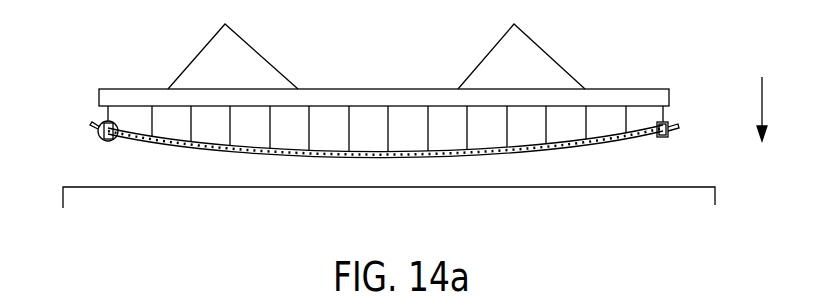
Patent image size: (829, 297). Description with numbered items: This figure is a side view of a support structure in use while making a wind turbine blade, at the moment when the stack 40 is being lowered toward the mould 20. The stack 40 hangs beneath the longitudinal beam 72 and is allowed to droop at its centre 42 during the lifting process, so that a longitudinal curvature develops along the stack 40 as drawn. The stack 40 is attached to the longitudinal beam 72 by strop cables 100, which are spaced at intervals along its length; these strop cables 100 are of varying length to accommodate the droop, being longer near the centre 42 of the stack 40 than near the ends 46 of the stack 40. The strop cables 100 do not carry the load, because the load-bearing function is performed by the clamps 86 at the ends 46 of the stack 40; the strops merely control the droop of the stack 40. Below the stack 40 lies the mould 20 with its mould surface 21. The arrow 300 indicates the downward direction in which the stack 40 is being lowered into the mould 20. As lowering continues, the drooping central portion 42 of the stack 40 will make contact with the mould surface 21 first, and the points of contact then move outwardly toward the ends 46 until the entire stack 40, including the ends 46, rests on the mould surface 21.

The longitudinal beam 72 is at (632, 97).
The stack 40 is at (590, 146).
The strop cables 100 is at (268, 147).
The centre of the stack 42 is at (392, 158).
The ends of the stack 46 is at (76, 122).
The clamps 86 is at (103, 136).
The direction of movement 300 is at (777, 109).
The mould 20 is at (715, 198).
The mould surface 21 is at (657, 189).